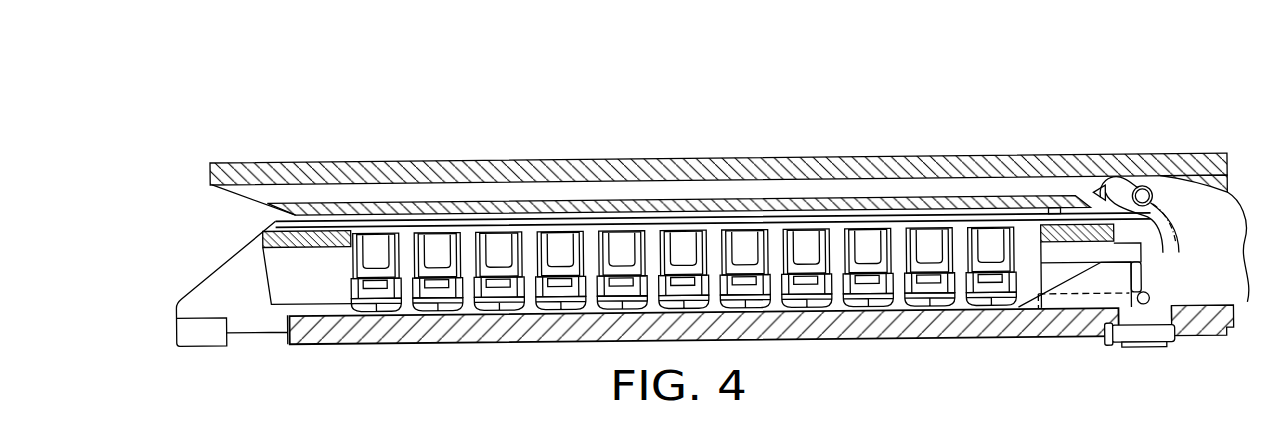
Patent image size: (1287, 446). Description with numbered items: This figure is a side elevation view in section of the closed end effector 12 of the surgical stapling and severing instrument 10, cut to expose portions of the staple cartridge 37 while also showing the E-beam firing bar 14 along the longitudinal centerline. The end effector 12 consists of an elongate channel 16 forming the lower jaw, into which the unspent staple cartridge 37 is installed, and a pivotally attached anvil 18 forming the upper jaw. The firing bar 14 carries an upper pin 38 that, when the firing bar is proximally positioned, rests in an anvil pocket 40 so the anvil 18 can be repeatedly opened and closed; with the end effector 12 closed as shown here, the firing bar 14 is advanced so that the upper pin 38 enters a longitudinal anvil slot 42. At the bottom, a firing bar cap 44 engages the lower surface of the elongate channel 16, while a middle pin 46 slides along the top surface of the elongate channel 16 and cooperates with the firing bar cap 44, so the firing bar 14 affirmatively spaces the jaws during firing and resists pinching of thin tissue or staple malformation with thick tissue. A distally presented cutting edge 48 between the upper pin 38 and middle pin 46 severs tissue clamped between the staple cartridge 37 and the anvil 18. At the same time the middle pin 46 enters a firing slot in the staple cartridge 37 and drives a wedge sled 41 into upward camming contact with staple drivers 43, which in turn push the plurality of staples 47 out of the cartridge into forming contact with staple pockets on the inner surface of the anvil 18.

The surgical stapling and severing instrument 10 is at (368, 79).
The end effector 12 is at (387, 137).
The E-beam firing bar 14 is at (1224, 236).
The elongate channel 16 is at (518, 345).
The anvil 18 is at (778, 162).
The staple cartridge 37 is at (255, 315).
The upper pin 38 is at (1118, 186).
The anvil pocket 40 is at (1197, 189).
The wedge sled 41 is at (1090, 286).
The longitudinal anvil slot 42 is at (473, 187).
The staple drivers 43 is at (1000, 307).
The firing bar cap 44 is at (1150, 345).
The middle pin 46 is at (1148, 304).
The staples 47 is at (963, 254).
The cutting edge 48 is at (1168, 250).